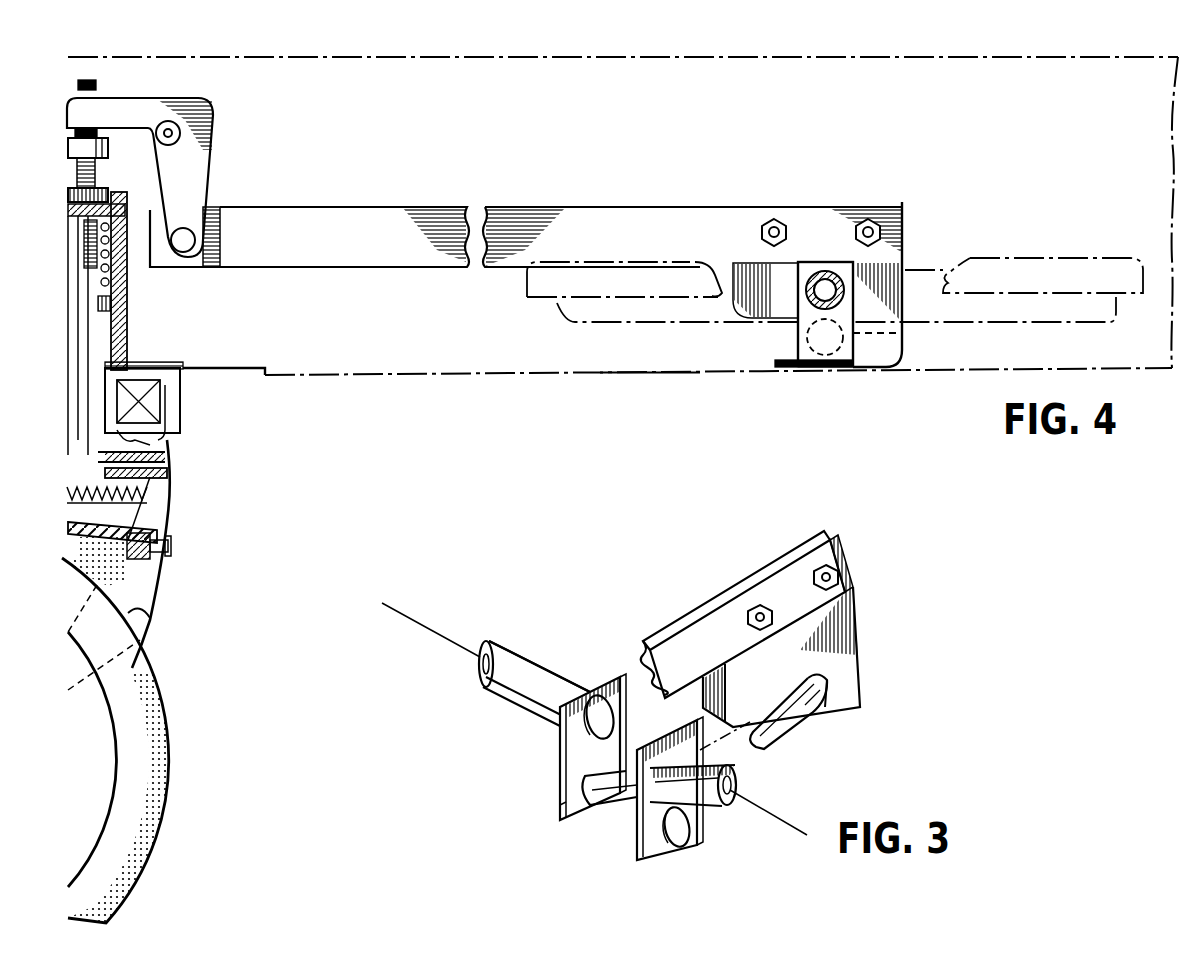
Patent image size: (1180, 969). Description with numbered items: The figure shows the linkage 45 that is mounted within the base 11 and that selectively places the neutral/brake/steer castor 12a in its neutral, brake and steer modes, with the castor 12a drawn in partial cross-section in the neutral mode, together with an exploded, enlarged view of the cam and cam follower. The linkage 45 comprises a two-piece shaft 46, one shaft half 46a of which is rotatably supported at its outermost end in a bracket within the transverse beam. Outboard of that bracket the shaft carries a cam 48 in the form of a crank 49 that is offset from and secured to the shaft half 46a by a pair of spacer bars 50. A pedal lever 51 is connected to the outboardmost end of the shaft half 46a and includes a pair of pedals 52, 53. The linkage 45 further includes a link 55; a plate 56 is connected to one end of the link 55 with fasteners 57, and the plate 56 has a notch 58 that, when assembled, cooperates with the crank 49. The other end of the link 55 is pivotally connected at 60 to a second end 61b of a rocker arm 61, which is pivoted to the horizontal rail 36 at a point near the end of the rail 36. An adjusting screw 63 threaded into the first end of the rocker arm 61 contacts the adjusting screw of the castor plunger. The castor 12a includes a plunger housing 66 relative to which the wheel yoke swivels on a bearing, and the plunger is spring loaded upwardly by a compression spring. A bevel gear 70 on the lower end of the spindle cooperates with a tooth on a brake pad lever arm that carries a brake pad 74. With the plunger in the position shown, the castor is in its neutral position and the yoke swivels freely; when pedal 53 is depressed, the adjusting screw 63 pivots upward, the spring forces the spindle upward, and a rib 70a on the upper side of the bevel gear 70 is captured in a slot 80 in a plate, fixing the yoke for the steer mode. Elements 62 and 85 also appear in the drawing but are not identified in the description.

In FIG. 4, the base 11 is at (510, 380).
In FIG. 4, the neutral/brake/steer castor 12a is at (178, 703).
In FIG. 4, the horizontal rail 36 is at (636, 374).
In FIG. 4, the linkage 45 is at (532, 166).
In FIG. 3, the two-piece shaft 46 is at (480, 696).
In FIG. 3, the shaft half 46a is at (515, 652).
In FIG. 4, the cam 48 is at (831, 261).
In FIG. 3, the cam 48 is at (555, 810).
In FIG. 4, the crank 49 is at (843, 368).
In FIG. 3, the crank 49 is at (603, 823).
In FIG. 4, the spacer bars 50 is at (786, 281).
In FIG. 3, the spacer bars 50 is at (560, 754).
In FIG. 4, the pedal lever 51 is at (672, 322).
In FIG. 4, the pedal 52 is at (624, 258).
In FIG. 4, the pedal 53 is at (1044, 259).
In FIG. 4, the link 55 is at (344, 237).
In FIG. 4, the plate 56 is at (903, 278).
In FIG. 3, the plate 56 is at (860, 635).
In FIG. 4, the fasteners 57 is at (774, 219).
In FIG. 3, the fasteners 57 is at (834, 576).
In FIG. 4, the notch 58 is at (790, 336).
In FIG. 3, the notch 58 is at (805, 716).
In FIG. 4, the pivotal connection 60 is at (185, 240).
In FIG. 4, the rocker arm 61 is at (211, 168).
In FIG. 4, the second rocker arm end 61b is at (200, 262).
In FIG. 4, the pin 62 is at (176, 131).
In FIG. 4, the adjusting screw 63 is at (93, 88).
In FIG. 4, the plunger housing 66 is at (122, 328).
In FIG. 4, the bevel gear 70 is at (135, 492).
In FIG. 4, the rib 70a is at (157, 480).
In FIG. 4, the brake pad 74 is at (163, 574).
In FIG. 4, the slot 80 is at (150, 455).
In FIG. 4, the shoe 85 is at (150, 619).